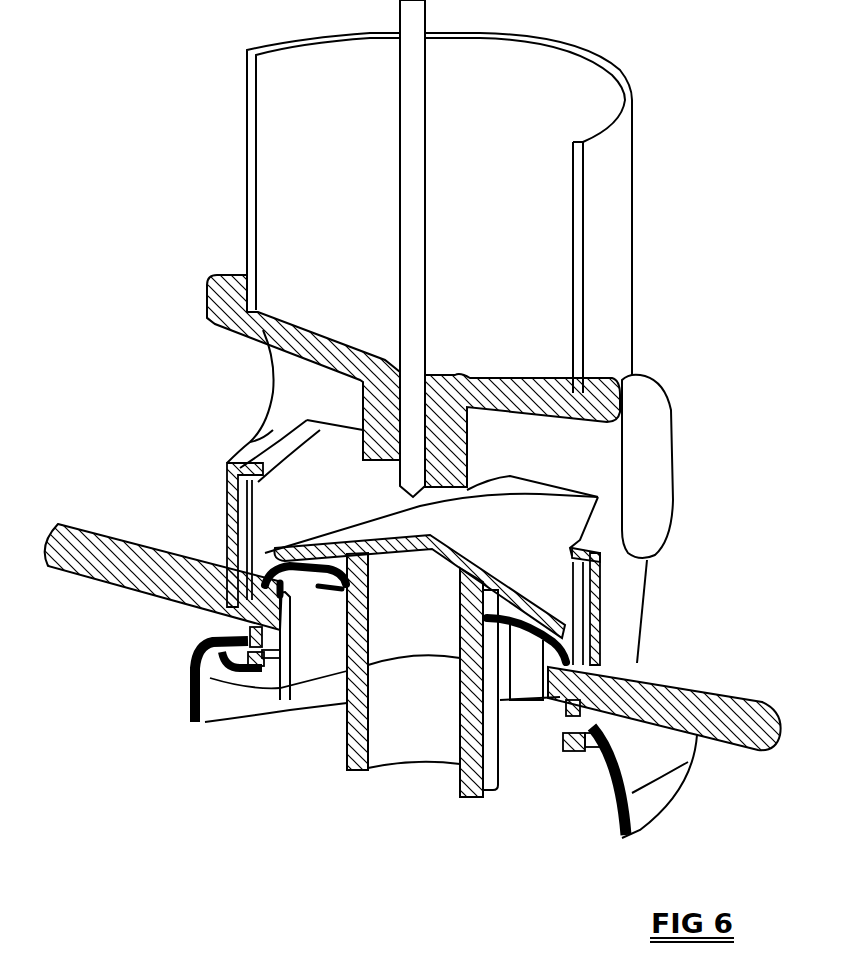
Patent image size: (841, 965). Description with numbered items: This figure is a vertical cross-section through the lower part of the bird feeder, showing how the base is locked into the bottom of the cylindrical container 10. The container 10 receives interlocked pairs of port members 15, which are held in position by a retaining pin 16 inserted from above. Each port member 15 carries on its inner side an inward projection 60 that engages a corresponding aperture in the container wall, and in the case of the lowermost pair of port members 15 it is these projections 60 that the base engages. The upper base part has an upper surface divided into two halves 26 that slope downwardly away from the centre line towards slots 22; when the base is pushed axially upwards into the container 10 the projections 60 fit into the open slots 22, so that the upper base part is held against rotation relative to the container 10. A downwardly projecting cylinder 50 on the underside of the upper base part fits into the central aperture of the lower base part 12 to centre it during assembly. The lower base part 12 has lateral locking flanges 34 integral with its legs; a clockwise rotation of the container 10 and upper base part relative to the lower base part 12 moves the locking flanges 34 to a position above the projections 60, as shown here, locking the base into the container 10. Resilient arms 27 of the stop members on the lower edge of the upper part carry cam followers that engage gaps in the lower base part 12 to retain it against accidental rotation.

The cylindrical container 10 is at (610, 200).
The retaining pin 16 is at (418, 190).
The port members 15 is at (648, 517).
The upper surface halves 26 is at (456, 588).
The slots 22 is at (270, 558).
The lateral locking flanges 34 is at (563, 646).
The downwardly projecting cylinder 50 is at (355, 737).
The resilient arm 27 is at (278, 672).
The inward projection 60 is at (580, 702).
The lower base part 12 is at (655, 752).